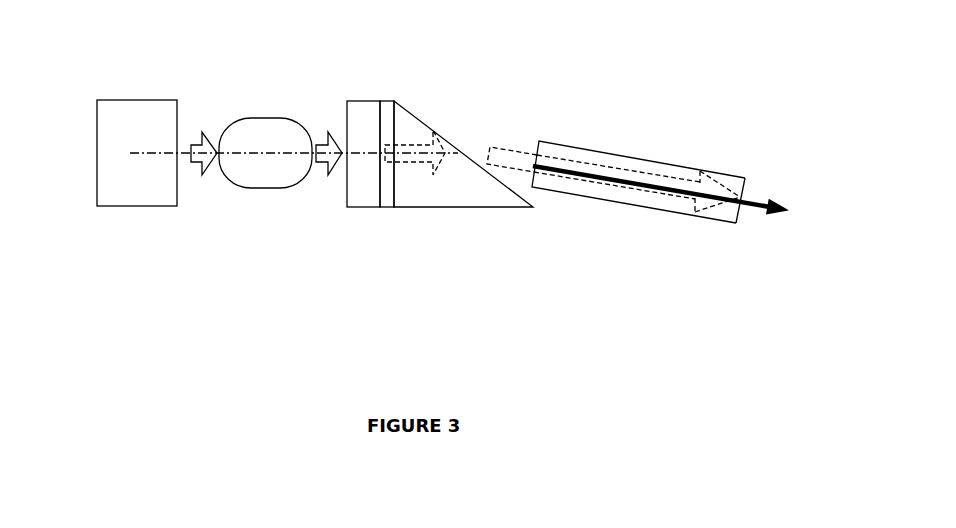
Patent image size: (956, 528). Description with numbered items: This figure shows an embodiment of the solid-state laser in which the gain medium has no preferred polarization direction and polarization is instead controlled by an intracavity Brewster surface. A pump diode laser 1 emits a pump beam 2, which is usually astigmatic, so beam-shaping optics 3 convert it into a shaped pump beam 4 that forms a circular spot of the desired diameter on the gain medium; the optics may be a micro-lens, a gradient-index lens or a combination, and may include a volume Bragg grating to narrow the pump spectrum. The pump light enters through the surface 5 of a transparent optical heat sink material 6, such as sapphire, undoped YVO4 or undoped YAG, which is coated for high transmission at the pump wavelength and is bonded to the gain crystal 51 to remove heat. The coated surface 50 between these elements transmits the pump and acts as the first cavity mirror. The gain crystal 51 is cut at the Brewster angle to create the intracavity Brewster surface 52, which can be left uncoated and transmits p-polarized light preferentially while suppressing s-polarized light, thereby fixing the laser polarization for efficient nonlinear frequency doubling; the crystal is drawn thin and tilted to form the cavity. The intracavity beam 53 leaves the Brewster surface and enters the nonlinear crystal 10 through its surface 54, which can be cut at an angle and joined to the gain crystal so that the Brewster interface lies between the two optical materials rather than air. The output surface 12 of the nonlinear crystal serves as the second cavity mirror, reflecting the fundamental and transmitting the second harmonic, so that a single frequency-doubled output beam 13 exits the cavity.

The pump diode laser 1 is at (138, 112).
The pump beam 2 is at (206, 158).
The beam-shaping optics 3 is at (277, 138).
The shaped pump beam 4 is at (330, 155).
The input surface of heat sink 5 is at (418, 153).
The transparent optical heat sink material 6 is at (362, 193).
The coated gain crystal input surface 50 is at (380, 120).
The gain crystal 51 is at (412, 185).
The intracavity Brewster surface 52 is at (428, 108).
The intracavity beam after Brewster surface 53 is at (503, 137).
The input surface of nonlinear crystal 54 is at (543, 150).
The nonlinear crystal 10 is at (608, 207).
The output surface of nonlinear crystal 12 is at (748, 190).
The output second-harmonic beam 13 is at (763, 215).